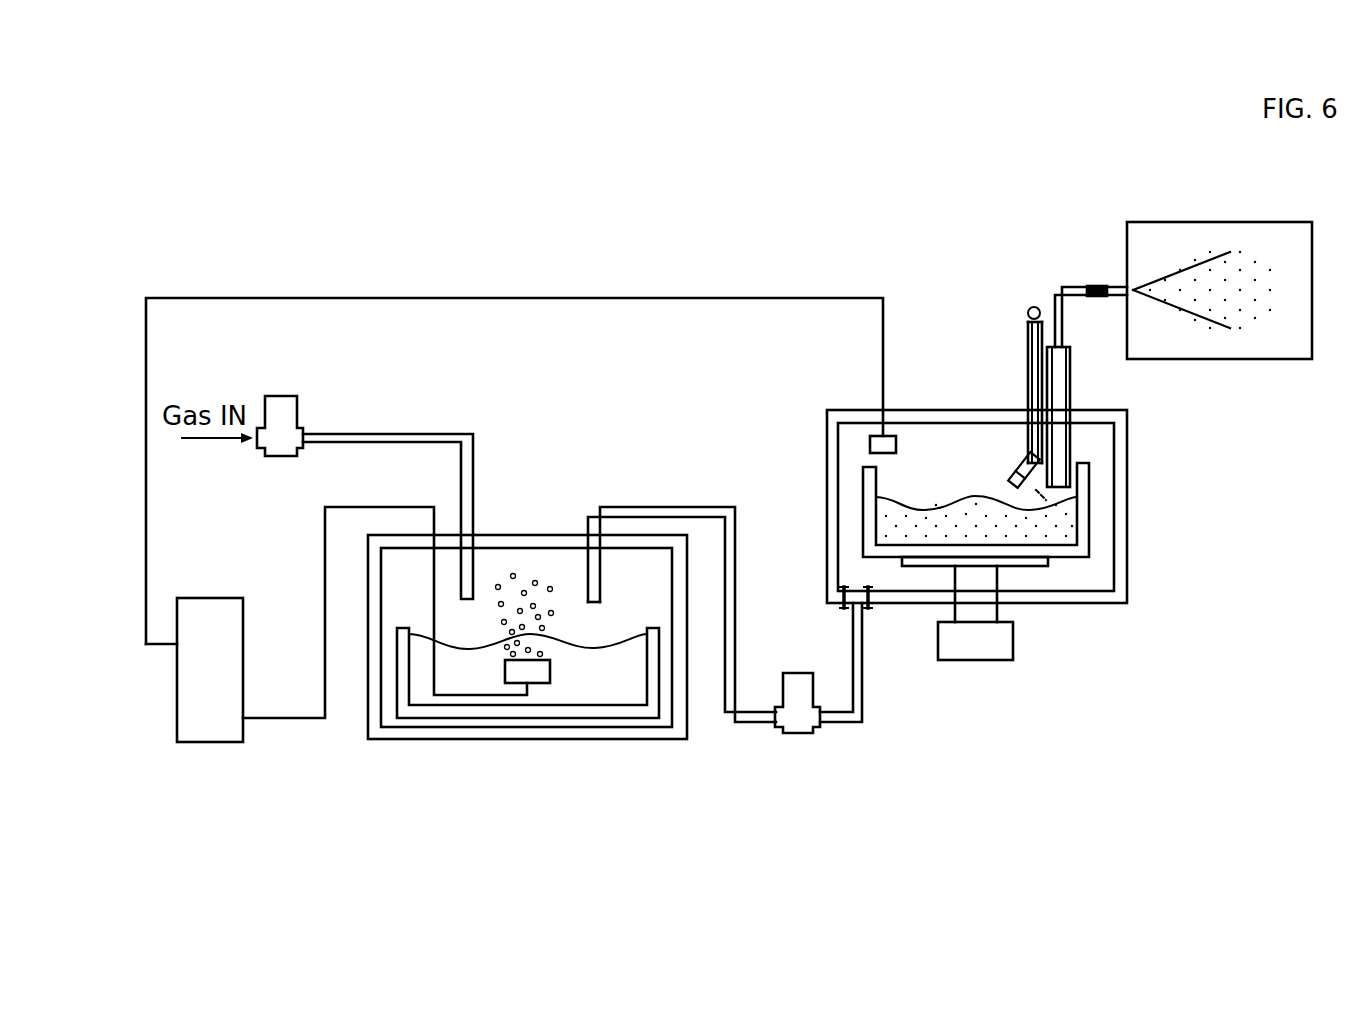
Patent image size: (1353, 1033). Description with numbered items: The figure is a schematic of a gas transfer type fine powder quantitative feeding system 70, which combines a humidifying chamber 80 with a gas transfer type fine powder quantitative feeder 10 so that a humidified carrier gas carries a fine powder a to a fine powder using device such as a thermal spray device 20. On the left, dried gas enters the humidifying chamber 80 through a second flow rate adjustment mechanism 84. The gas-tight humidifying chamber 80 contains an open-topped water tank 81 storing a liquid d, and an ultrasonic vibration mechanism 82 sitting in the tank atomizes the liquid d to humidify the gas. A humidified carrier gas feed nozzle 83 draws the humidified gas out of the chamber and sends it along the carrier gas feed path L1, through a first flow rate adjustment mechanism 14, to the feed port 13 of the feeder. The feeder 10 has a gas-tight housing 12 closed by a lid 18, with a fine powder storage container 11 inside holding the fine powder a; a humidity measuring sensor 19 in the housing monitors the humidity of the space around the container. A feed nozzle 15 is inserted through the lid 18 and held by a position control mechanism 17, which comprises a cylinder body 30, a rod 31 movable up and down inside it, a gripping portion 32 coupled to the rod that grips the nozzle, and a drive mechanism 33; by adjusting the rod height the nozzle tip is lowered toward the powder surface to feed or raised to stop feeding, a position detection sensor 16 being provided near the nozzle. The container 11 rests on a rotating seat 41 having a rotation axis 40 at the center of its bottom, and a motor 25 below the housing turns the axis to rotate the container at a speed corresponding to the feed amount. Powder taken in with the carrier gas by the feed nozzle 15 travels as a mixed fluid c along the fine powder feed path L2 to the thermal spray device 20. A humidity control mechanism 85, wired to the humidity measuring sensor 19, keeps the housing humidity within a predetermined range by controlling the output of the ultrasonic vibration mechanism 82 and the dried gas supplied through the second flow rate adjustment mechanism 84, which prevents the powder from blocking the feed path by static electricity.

The gas transfer type fine powder quantitative feeder 10 is at (1019, 483).
The fine powder storage container 11 is at (860, 497).
The housing 12 is at (855, 413).
The feed port 13 is at (870, 606).
The first flow rate adjustment mechanism 14 is at (797, 683).
The feed nozzle 15 is at (1069, 376).
The position detection sensor 16 is at (1012, 453).
The position control mechanism 17 is at (1006, 372).
The lid 18 is at (1097, 410).
The humidity measuring sensor 19 is at (896, 445).
The thermal spray device 20 is at (1293, 355).
The motor 25 is at (992, 648).
The cylinder body 30 is at (1027, 340).
The rod 31 is at (1027, 395).
The gripping portion 32 is at (1040, 463).
The drive mechanism 33 is at (1030, 307).
The rotation axis 40 is at (987, 612).
The rotating seat 41 is at (1005, 560).
The gas transfer type fine powder quantitative feeding system 70 is at (1170, 610).
The humidifying chamber 80 is at (388, 735).
The water tank 81 is at (472, 722).
The ultrasonic vibration mechanism 82 is at (545, 668).
The humidified carrier gas feed nozzle 83 is at (600, 563).
The second flow rate adjustment mechanism 84 is at (279, 406).
The humidity control mechanism 85 is at (243, 657).
The carrier gas feed path L1 is at (702, 505).
The fine powder feed path L2 is at (1064, 287).
The fine powder a is at (1060, 537).
The mixed fluid c is at (1095, 287).
The liquid d is at (624, 688).